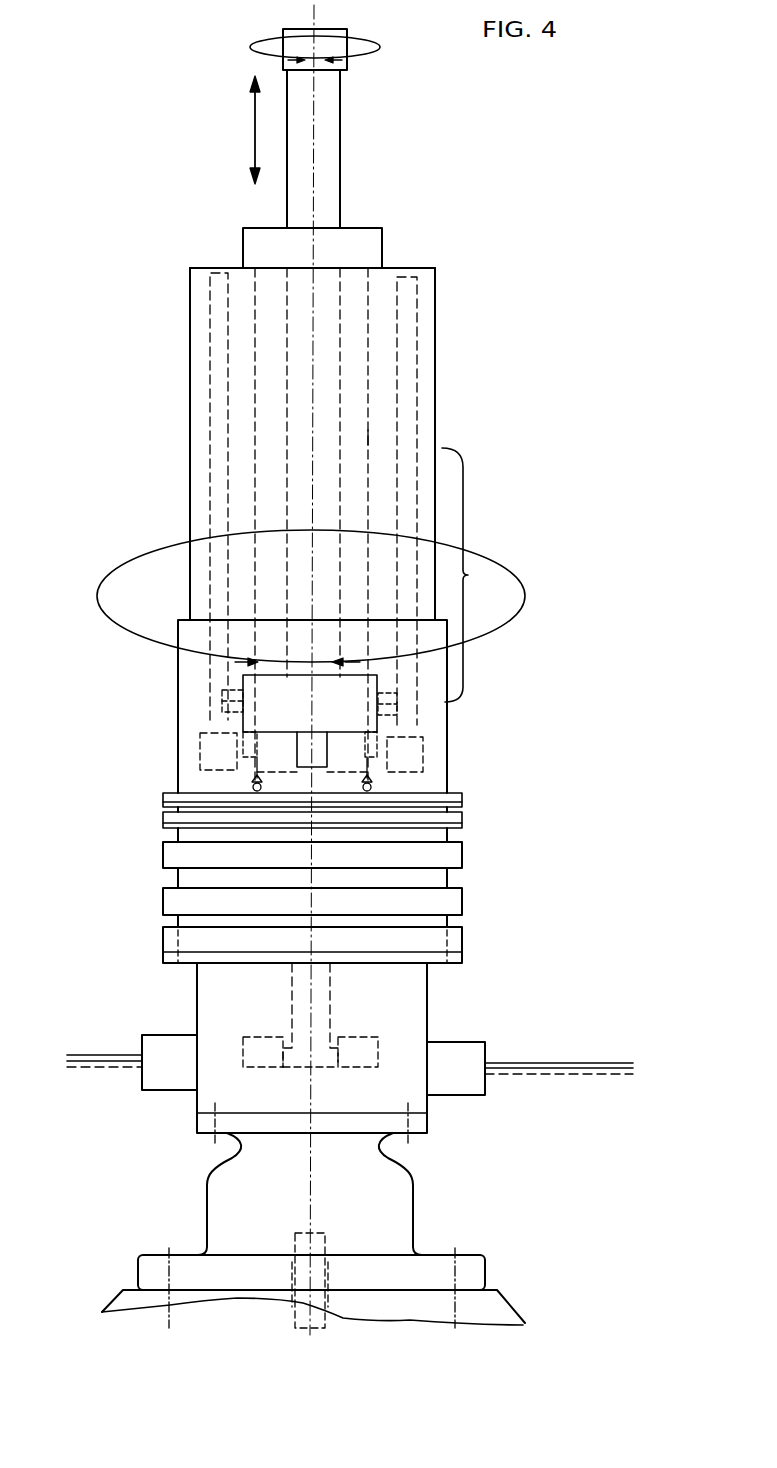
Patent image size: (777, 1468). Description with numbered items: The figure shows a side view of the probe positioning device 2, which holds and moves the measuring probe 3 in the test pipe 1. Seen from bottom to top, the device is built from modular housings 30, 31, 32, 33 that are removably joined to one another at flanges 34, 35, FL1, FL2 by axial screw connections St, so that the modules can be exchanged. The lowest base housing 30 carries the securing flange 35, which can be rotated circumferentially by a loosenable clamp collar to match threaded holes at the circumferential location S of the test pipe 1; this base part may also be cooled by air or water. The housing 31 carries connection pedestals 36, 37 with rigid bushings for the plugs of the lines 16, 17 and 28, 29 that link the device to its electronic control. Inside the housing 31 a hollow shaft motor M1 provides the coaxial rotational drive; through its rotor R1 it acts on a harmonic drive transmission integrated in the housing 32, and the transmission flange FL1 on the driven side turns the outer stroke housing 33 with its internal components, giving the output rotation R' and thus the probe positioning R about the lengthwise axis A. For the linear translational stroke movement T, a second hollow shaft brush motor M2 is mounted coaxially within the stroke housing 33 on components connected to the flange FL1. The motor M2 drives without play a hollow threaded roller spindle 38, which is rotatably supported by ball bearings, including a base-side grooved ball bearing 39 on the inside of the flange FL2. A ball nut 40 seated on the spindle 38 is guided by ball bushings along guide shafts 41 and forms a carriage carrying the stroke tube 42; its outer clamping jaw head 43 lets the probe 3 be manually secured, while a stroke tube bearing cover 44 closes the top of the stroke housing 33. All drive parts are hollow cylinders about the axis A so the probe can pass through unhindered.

The test pipe 1 is at (498, 1313).
The probe positioning device 2 is at (468, 394).
The measuring probe 3 is at (300, 1323).
The line 16 is at (622, 1065).
The line 17 is at (623, 1075).
The line 28 is at (93, 1058).
The line 29 is at (105, 1068).
The base housing 30 is at (402, 1220).
The housing 31 is at (408, 1017).
The housing 32 is at (428, 881).
The outer stroke housing 33 is at (482, 571).
The flange 34 is at (413, 1123).
The securing flange 35 is at (455, 945).
The connection pedestal 36 is at (472, 1057).
The connection pedestal 37 is at (167, 1065).
The threaded roller spindle 38 is at (367, 438).
The grooved ball bearing 39 is at (367, 792).
The ball nut 40 is at (362, 690).
The guide shaft 41 is at (222, 312).
The stroke tube 42 is at (333, 298).
The clamping jaw head 43 is at (328, 35).
The stroke tube bearing cover 44 is at (260, 243).
The probe positioning rotation R is at (288, 29).
The output rotational movement R' is at (311, 572).
The translational stroke movement T is at (252, 123).
The lengthwise axis A is at (313, 357).
The hollow shaft motor M1 is at (253, 1057).
The hollow shaft brush motor M2 is at (217, 749).
The rotor R1 is at (290, 992).
The transmission flange FL1 is at (460, 823).
The flange FL2 is at (460, 803).
The screw connection St is at (162, 812).
The circumferential location S is at (483, 1293).